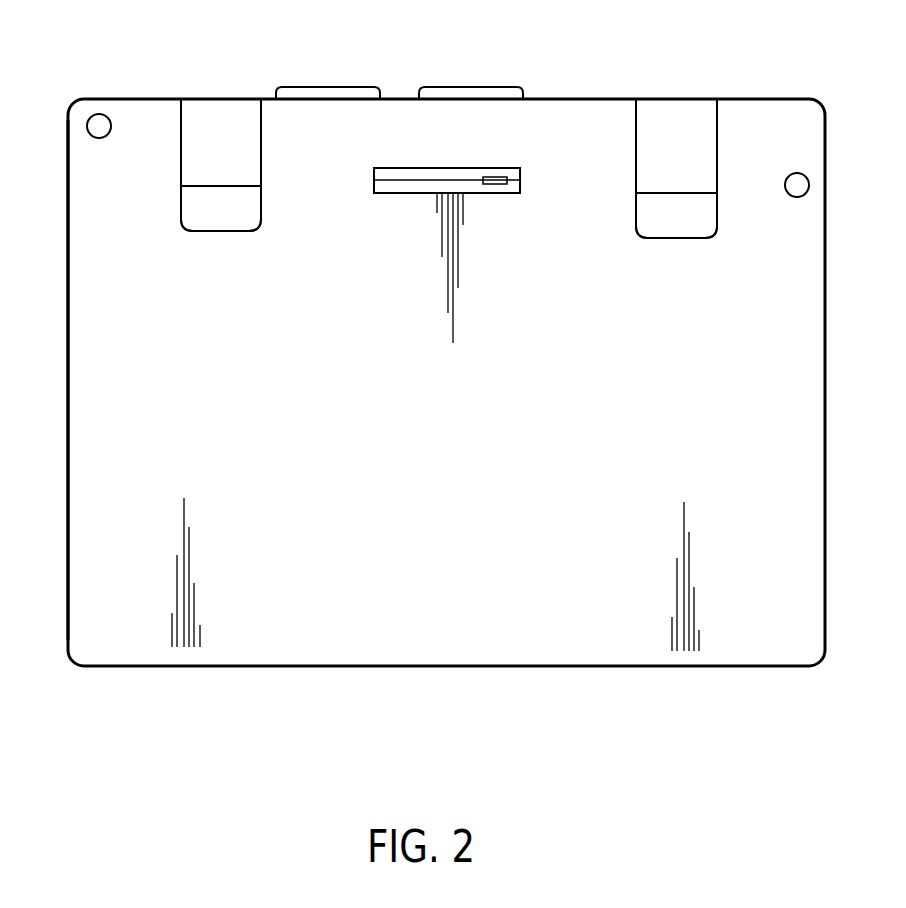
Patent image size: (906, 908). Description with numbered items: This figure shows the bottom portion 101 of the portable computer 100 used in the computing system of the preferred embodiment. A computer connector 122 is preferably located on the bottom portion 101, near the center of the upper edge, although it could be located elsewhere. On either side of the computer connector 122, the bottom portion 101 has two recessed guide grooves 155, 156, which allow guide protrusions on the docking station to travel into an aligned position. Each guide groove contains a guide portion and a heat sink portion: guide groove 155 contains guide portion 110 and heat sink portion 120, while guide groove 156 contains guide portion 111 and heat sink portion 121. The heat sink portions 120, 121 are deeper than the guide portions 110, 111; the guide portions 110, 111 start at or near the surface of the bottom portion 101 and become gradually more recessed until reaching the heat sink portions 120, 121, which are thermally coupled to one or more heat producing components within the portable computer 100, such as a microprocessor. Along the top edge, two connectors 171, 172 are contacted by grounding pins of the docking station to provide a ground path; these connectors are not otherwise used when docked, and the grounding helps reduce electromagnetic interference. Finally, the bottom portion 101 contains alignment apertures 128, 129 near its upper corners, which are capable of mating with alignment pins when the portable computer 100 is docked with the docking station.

The portable computer 100 is at (107, 97).
The bottom portion 101 is at (77, 563).
The guide portion 110 is at (633, 165).
The guide portion 111 is at (260, 160).
The heat sink portion 120 is at (633, 217).
The heat sink portion 121 is at (260, 212).
The computer connector 122 is at (423, 193).
The alignment aperture 128 is at (798, 198).
The alignment aperture 129 is at (93, 142).
The guide groove 155 is at (668, 238).
The guide groove 156 is at (223, 233).
The connector 171 is at (492, 85).
The connector 172 is at (342, 85).